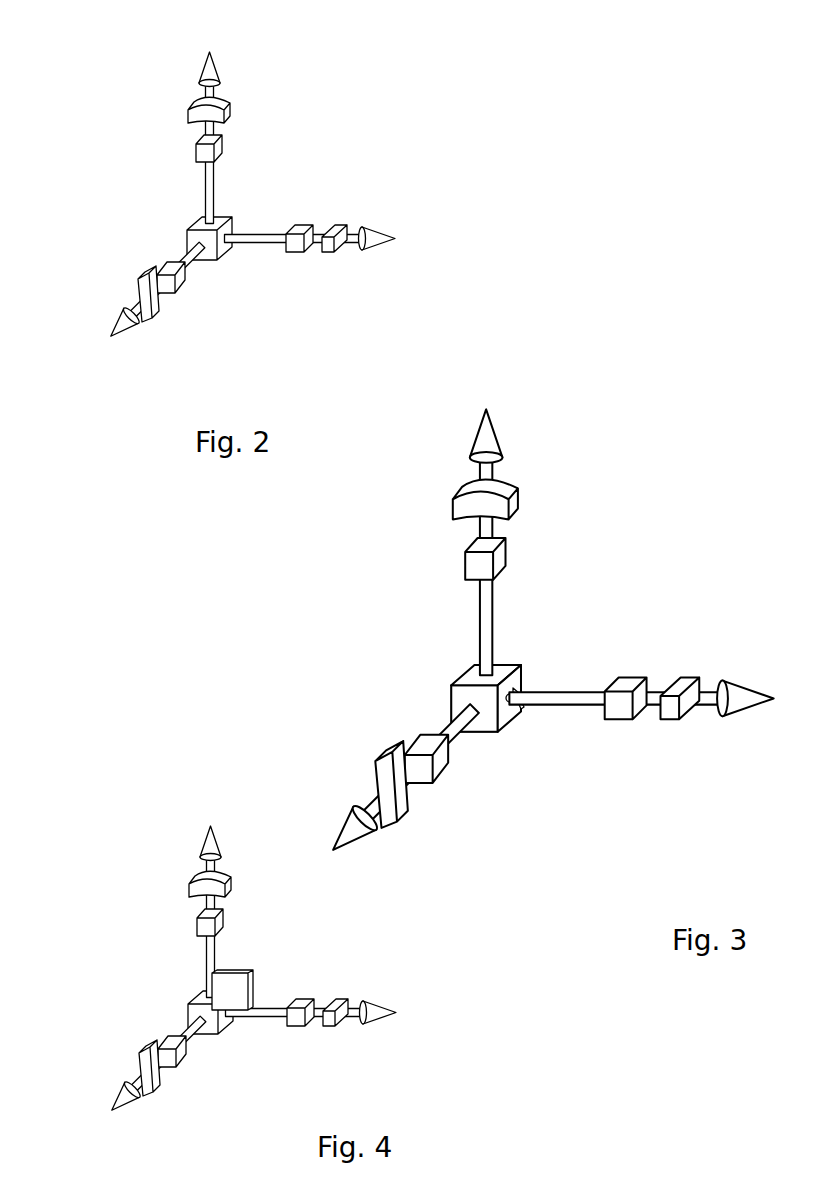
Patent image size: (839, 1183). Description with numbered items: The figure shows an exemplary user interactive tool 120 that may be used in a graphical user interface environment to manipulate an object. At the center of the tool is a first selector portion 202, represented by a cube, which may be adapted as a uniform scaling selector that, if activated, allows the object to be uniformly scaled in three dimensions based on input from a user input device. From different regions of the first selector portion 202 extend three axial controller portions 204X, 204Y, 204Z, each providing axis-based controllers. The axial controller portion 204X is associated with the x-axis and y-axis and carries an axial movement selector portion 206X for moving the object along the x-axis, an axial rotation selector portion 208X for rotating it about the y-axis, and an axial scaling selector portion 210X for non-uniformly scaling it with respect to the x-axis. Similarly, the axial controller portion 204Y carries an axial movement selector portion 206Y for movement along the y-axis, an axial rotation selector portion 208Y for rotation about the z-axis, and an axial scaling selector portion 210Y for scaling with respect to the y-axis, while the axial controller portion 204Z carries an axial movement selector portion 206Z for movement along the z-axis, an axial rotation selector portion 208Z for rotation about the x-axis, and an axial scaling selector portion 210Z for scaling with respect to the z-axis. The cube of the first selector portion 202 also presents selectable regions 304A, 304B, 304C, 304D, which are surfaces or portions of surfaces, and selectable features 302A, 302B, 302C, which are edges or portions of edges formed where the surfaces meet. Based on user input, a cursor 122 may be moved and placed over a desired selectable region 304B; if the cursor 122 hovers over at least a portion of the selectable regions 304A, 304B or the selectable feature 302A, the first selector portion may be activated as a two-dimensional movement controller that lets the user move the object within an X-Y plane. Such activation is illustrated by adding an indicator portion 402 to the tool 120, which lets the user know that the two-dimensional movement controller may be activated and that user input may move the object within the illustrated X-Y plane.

In FIG. 2, the user interface tool 120 is at (112, 30).
In FIG. 3, the user interface tool 120 is at (584, 471).
In FIG. 4, the user interface tool 120 is at (114, 803).
In FIG. 3, the cursor 122 is at (530, 698).
In FIG. 2, the first selector portion 202 is at (190, 221).
In FIG. 3, the first selector portion 202 is at (463, 678).
In FIG. 4, the first selector portion 202 is at (192, 996).
In FIG. 2, the axial controller portion 204X is at (351, 223).
In FIG. 3, the axial controller portion 204X is at (681, 746).
In FIG. 4, the axial controller portion 204X is at (383, 1046).
In FIG. 2, the axial controller portion 204Y is at (185, 137).
In FIG. 3, the axial controller portion 204Y is at (411, 511).
In FIG. 4, the axial controller portion 204Y is at (161, 894).
In FIG. 2, the axial controller portion 204Z is at (126, 304).
In FIG. 3, the axial controller portion 204Z is at (373, 863).
In FIG. 4, the axial controller portion 204Z is at (141, 1122).
In FIG. 2, the axial movement selector portion 206X is at (380, 240).
In FIG. 2, the axial movement selector portion 206Y is at (212, 72).
In FIG. 2, the axial movement selector portion 206Z is at (125, 330).
In FIG. 2, the axial rotation selector portion 208X is at (353, 220).
In FIG. 2, the axial rotation selector portion 208Y is at (224, 106).
In FIG. 2, the axial rotation selector portion 208Z is at (145, 290).
In FIG. 2, the axial scaling selector portion 210X is at (300, 232).
In FIG. 2, the axial scaling selector portion 210Y is at (220, 146).
In FIG. 2, the axial scaling selector portion 210Z is at (168, 267).
In FIG. 3, the selectable feature 302A is at (485, 668).
In FIG. 3, the selectable feature 302B is at (497, 728).
In FIG. 3, the selectable feature 302C is at (462, 685).
In FIG. 3, the selectable region 304A is at (497, 672).
In FIG. 3, the selectable region 304B is at (508, 672).
In FIG. 3, the selectable region 304C is at (487, 712).
In FIG. 3, the selectable region 304D is at (462, 697).
In FIG. 4, the indicator portion 402 is at (242, 990).